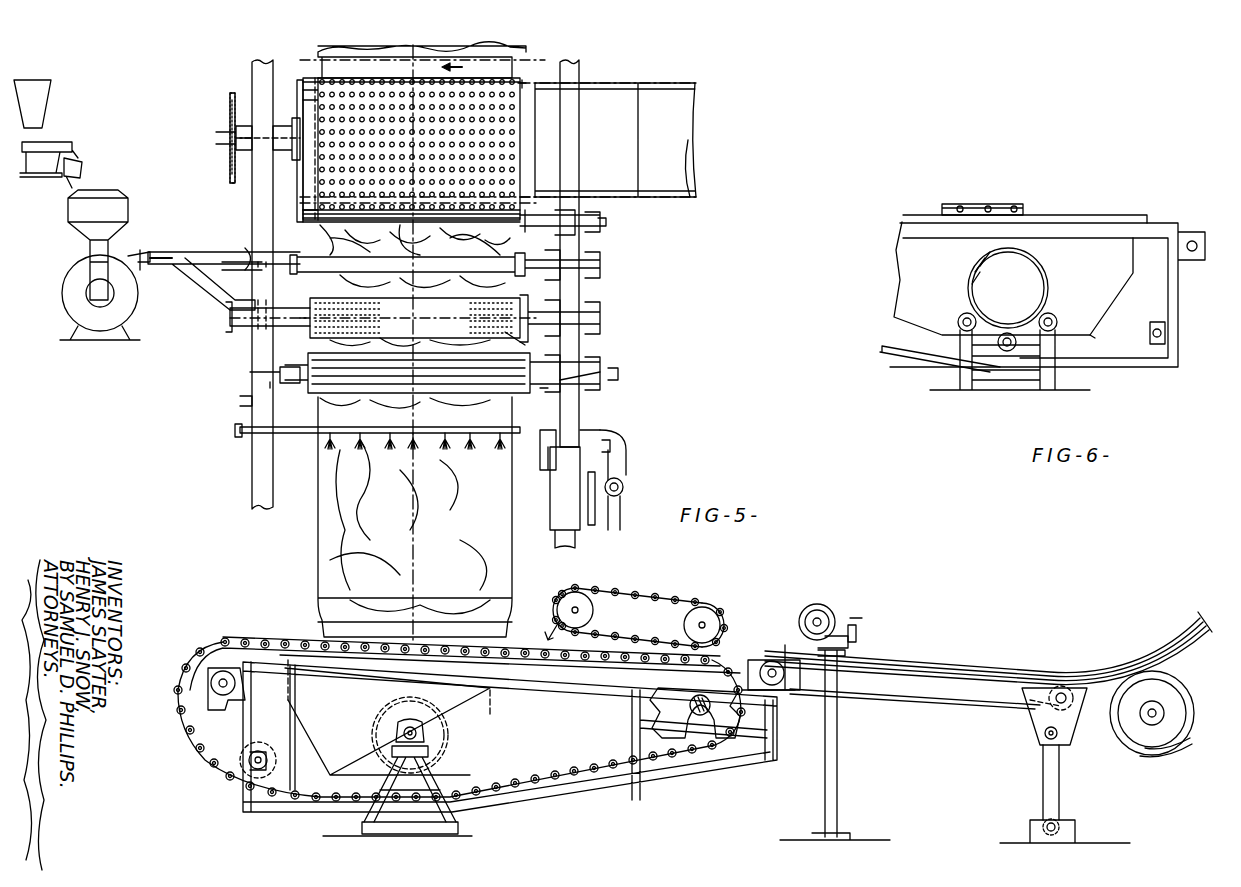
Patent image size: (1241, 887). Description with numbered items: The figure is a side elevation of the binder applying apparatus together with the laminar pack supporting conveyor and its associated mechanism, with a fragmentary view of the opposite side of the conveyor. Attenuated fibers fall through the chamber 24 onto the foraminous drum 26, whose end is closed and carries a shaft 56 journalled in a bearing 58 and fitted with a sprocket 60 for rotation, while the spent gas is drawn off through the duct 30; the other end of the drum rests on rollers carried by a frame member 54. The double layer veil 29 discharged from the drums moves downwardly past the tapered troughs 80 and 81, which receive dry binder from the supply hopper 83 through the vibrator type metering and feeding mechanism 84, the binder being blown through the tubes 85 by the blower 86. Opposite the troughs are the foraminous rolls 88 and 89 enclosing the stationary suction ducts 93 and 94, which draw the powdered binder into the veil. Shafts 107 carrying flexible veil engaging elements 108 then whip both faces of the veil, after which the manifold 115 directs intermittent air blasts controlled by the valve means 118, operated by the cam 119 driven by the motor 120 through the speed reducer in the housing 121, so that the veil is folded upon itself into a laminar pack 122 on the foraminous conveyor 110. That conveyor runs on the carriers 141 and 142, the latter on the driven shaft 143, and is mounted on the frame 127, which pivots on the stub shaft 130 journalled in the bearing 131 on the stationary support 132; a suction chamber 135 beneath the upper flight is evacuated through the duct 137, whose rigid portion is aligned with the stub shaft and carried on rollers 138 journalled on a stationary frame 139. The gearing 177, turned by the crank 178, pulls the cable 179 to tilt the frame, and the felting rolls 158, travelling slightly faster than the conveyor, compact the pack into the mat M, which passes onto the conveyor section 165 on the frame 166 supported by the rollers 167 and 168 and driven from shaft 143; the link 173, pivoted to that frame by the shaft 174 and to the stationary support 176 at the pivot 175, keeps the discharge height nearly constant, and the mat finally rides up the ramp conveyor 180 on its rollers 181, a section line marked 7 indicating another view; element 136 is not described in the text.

In FIG. 5, the supply hopper 83 is at (51, 92).
In FIG. 5, the material metering and feeding mechanism 84 is at (40, 142).
In FIG. 5, the blower 86 is at (63, 290).
In FIG. 5, the tubes 85 is at (200, 305).
In FIG. 5, the stationary duct 94 is at (238, 273).
In FIG. 5, the stationary duct 93 is at (240, 332).
In FIG. 5, the sprocket 60 is at (231, 105).
In FIG. 5, the bearing 58 is at (244, 128).
In FIG. 5, the shaft 56 is at (302, 100).
In FIG. 5, the chamber 24 is at (516, 52).
In FIG. 5, the section line 7 is at (458, 72).
In FIG. 5, the drum 26 is at (310, 184).
In FIG. 5, the duct 30 is at (612, 90).
In FIG. 5, the trough 80 is at (470, 260).
In FIG. 5, the cylindrical roll 89 is at (515, 255).
In FIG. 5, the cylindrical roll 88 is at (515, 300).
In FIG. 5, the trough 81 is at (525, 347).
In FIG. 5, the frame member 54 is at (585, 365).
In FIG. 5, the veil engaging element 108 is at (365, 365).
In FIG. 5, the shaft 107 is at (292, 386).
In FIG. 5, the manifold 115 is at (290, 436).
In FIG. 5, the veil 29 is at (320, 520).
In FIG. 5, the housing 121 is at (552, 516).
In FIG. 5, the motor 120 is at (552, 452).
In FIG. 5, the valve means 118 is at (624, 482).
In FIG. 5, the cam 119 is at (592, 525).
In FIG. 5, the felting rolls 158 is at (625, 590).
In FIG. 5, the laminar pack 122 is at (540, 610).
In FIG. 5, the conveyor 110 is at (290, 638).
In FIG. 6, the conveyor 110 is at (982, 200).
In FIG. 5, the sprocket 141 is at (222, 660).
In FIG. 5, the frame 127 is at (525, 808).
In FIG. 6, the frame 127 is at (1118, 368).
In FIG. 5, the chamber 135 is at (316, 726).
In FIG. 6, the chamber 135 is at (1118, 285).
In FIG. 5, the roller 136 is at (310, 772).
In FIG. 6, the roller 136 is at (1092, 336).
In FIG. 5, the duct 137 is at (386, 692).
In FIG. 6, the duct 137 is at (1048, 270).
In FIG. 5, the stub shaft 130 is at (420, 718).
In FIG. 5, the bearing 131 is at (424, 738).
In FIG. 5, the support 132 is at (450, 828).
In FIG. 5, the carrier 142 is at (656, 700).
In FIG. 5, the shaft 143 is at (702, 716).
In FIG. 5, the roller 167 is at (766, 660).
In FIG. 5, the cable 179 is at (800, 680).
In FIG. 5, the gearing 177 is at (832, 614).
In FIG. 5, the crank 178 is at (860, 632).
In FIG. 5, the conveyor section 165 is at (904, 666).
In FIG. 5, the mat M is at (952, 640).
In FIG. 5, the frame 166 is at (972, 702).
In FIG. 5, the roller 168 is at (1068, 692).
In FIG. 5, the shaft 174 is at (1056, 738).
In FIG. 5, the link 173 is at (1059, 780).
In FIG. 5, the support 176 is at (1030, 830).
In FIG. 5, the pivot connection 175 is at (1044, 822).
In FIG. 5, the conveyor section 180 is at (1170, 660).
In FIG. 5, the rollers 181 is at (1150, 752).
In FIG. 6, the rollers 138 is at (1066, 306).
In FIG. 6, the frame 139 is at (1050, 372).